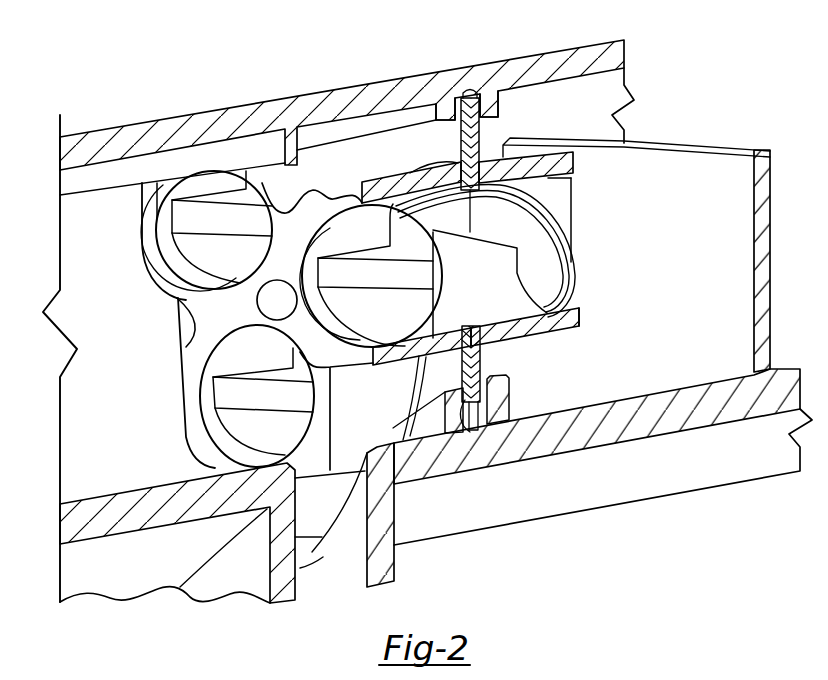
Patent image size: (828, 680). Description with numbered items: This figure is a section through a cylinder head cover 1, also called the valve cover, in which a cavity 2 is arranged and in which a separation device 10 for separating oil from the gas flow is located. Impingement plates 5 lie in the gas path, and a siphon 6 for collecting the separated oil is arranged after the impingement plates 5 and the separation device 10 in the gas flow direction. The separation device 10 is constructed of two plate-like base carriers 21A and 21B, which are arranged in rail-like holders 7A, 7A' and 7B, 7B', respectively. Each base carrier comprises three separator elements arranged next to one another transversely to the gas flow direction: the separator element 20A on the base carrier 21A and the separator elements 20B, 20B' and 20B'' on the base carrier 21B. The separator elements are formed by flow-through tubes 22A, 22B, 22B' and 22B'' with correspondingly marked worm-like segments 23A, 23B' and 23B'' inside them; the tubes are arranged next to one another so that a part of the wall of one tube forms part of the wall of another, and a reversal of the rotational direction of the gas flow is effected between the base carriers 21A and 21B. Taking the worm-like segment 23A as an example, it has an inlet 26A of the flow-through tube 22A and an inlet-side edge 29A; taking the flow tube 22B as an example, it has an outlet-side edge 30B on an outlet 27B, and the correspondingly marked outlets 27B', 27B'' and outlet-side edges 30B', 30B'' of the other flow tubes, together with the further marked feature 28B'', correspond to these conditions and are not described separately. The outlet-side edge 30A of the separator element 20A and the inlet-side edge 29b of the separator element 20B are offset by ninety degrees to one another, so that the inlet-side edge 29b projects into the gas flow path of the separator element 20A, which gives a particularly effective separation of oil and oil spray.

The cylinder head cover 1 is at (660, 490).
The cavity 2 is at (70, 410).
The impingement plates 5 is at (728, 172).
The siphon 6 is at (323, 557).
The separation device 10 is at (464, 405).
The rail-like holder 7A is at (417, 410).
The rail-like holder 7A' is at (534, 399).
The rail-like holder 7B is at (439, 76).
The rail-like holder 7B' is at (503, 67).
The separator element 20A is at (529, 165).
The separator element 20B is at (380, 246).
The separator element 20B' is at (220, 383).
The separator element 20B'' is at (182, 235).
The base carrier 21A is at (482, 370).
The base carrier 21B is at (429, 372).
The flow-through tube 22A is at (579, 320).
The flow-through tube 22B is at (312, 191).
The flow-through tube 22B' is at (159, 334).
The flow-through tube 22B'' is at (118, 200).
The worm-like segment 23A is at (566, 212).
The worm-like segment 23B' is at (253, 354).
The worm-like segment 23B'' is at (209, 138).
The inlet 26A is at (576, 240).
The outlet 27B is at (361, 316).
The vane lower edge B' 27B' is at (207, 435).
The vane lower edge B'' 27B'' is at (175, 278).
The bore wall B'' 28B'' is at (158, 238).
The inlet-side edge 29A is at (572, 187).
The inlet-side edge 29b is at (473, 240).
The outlet-side edge 30A is at (449, 203).
The outlet-side edge 30B is at (375, 251).
The slot B' 30B' is at (219, 392).
The slot B'' 30B'' is at (181, 233).